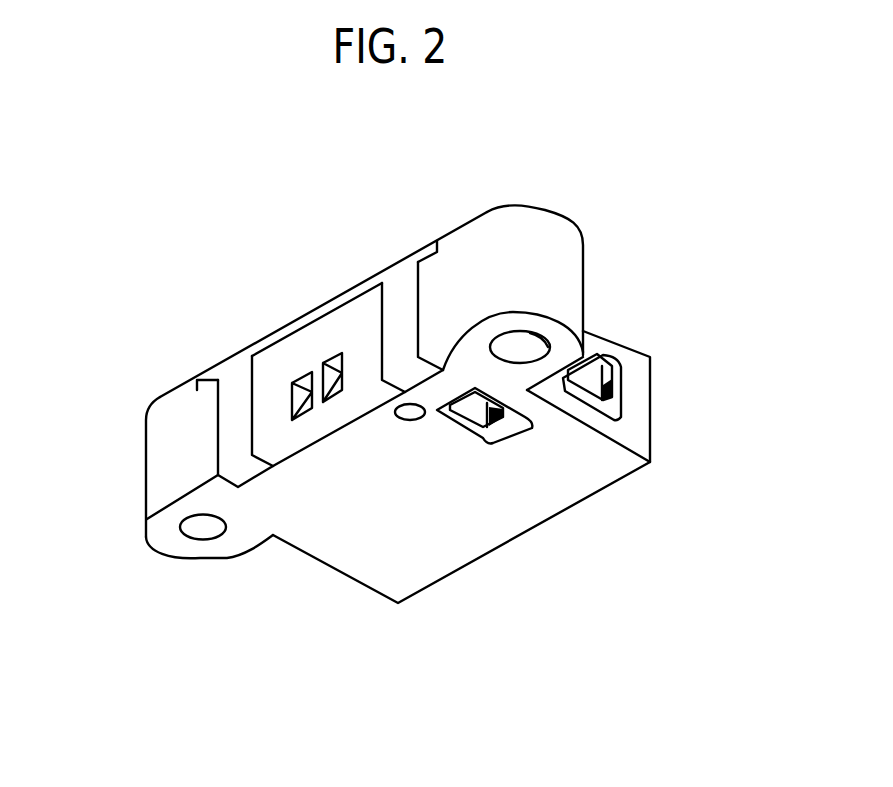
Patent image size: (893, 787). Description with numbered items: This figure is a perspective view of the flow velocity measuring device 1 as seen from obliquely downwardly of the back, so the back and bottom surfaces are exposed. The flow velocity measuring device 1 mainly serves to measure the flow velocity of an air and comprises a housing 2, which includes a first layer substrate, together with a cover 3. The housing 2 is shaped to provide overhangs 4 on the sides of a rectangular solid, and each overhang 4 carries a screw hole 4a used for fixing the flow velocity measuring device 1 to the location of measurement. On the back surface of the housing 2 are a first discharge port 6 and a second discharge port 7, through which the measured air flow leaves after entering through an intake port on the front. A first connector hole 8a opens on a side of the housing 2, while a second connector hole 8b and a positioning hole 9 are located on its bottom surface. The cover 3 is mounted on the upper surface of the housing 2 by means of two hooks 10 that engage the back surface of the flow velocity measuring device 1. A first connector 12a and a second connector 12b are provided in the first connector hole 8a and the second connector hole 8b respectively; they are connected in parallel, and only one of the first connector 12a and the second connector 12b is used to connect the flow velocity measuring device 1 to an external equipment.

The flow velocity measuring device 1 is at (116, 201).
The housing 2 is at (291, 547).
The cover 3 is at (379, 276).
The overhang 4 is at (557, 240).
The screw hole 4a is at (577, 343).
The first discharge port 6 is at (296, 380).
The second discharge port 7 is at (330, 360).
The first connector hole 8a is at (603, 357).
The second connector hole 8b is at (529, 424).
The positioning hole 9 is at (407, 421).
The hook 10 is at (220, 420).
The first connector 12a is at (613, 396).
The second connector 12b is at (489, 441).